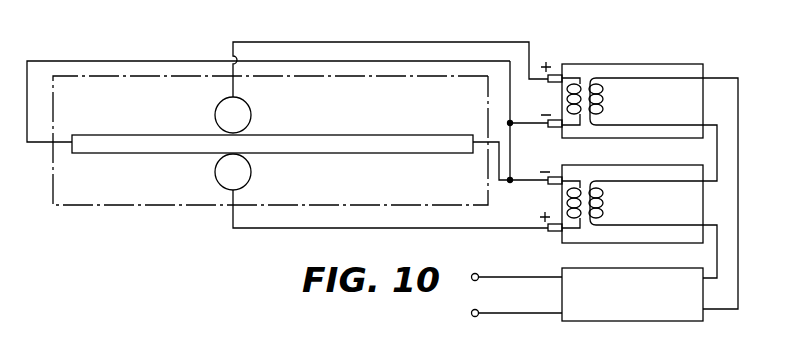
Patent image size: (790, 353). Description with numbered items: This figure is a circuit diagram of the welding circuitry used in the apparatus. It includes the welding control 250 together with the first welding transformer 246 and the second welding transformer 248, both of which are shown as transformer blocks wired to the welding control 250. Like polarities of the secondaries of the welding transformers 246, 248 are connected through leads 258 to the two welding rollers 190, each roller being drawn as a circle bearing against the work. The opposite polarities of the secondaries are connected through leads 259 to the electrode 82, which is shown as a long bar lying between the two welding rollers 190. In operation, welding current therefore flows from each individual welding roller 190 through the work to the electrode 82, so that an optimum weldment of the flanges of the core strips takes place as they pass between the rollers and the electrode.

The electrode 82 is at (172, 158).
The welding rollers 190 is at (244, 110).
The leads 258 is at (413, 42).
The leads 259 is at (33, 143).
The second welding transformer 248 is at (619, 36).
The first welding transformer 246 is at (590, 243).
The welding control 250 is at (617, 322).